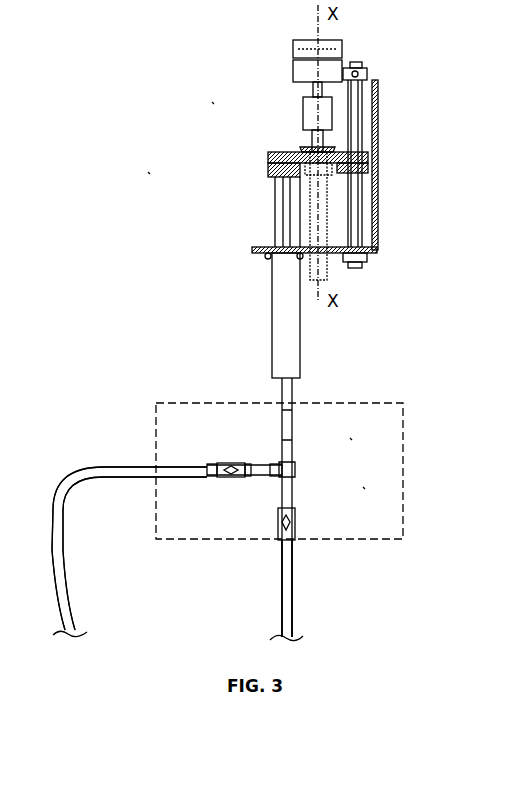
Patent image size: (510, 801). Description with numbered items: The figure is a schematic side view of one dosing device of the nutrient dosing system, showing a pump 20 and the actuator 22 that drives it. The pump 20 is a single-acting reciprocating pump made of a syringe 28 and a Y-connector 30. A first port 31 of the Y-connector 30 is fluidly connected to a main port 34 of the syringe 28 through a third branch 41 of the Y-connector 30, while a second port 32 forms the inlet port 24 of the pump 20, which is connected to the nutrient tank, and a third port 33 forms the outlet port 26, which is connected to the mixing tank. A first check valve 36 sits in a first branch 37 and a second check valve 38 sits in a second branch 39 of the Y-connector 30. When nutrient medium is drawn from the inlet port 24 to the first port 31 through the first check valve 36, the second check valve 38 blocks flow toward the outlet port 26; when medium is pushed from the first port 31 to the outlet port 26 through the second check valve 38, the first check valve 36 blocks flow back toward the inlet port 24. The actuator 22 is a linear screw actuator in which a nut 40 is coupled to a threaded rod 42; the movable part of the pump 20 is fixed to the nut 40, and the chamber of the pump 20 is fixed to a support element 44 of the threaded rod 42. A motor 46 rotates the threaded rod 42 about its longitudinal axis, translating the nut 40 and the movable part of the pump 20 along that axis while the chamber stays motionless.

The pump 20 is at (148, 172).
The actuator 22 is at (212, 102).
The inlet port 24 is at (155, 465).
The outlet port 26 is at (278, 538).
The syringe 28 is at (272, 325).
The Y-connector 30 is at (155, 417).
The first port 31 is at (281, 403).
The second port 32 is at (129, 548).
The third port 33 is at (246, 588).
The main port 34 is at (293, 390).
The first check valve 36 is at (226, 478).
The first branch 37 is at (217, 443).
The second check valve 38 is at (298, 520).
The second branch 39 is at (363, 487).
The nut 40 is at (312, 222).
The third branch 41 is at (350, 438).
The threaded rod 42 is at (303, 153).
The support element 44 is at (377, 156).
The motor 46 is at (342, 45).